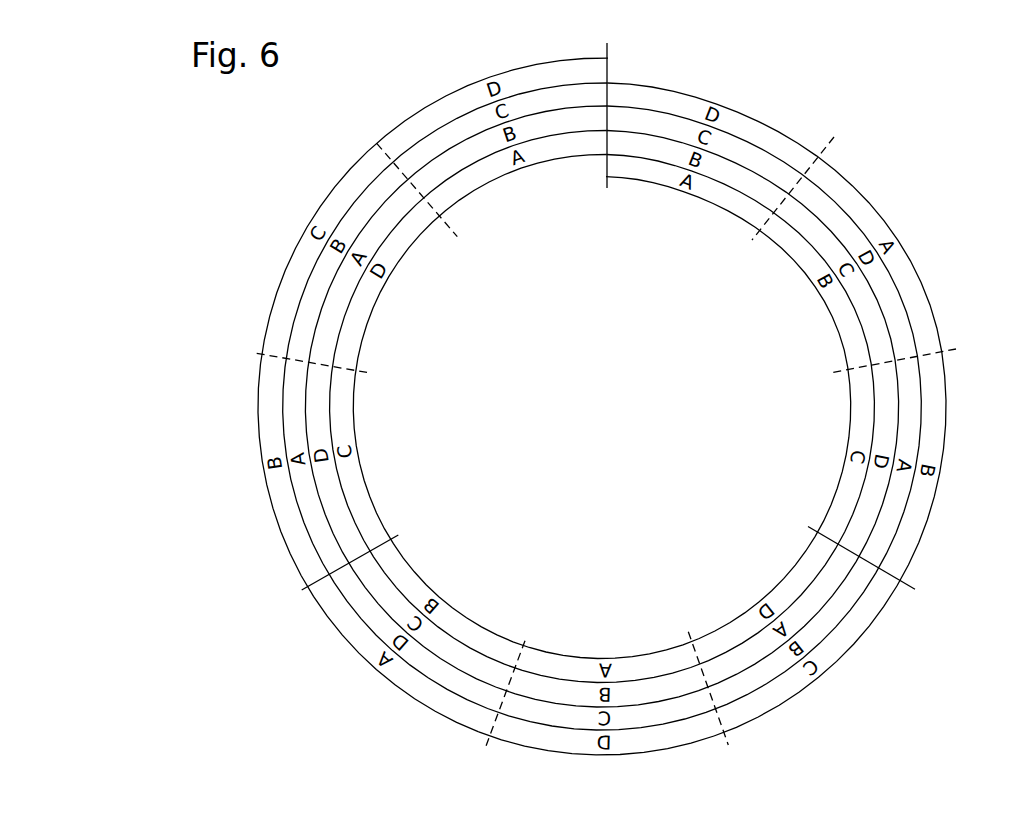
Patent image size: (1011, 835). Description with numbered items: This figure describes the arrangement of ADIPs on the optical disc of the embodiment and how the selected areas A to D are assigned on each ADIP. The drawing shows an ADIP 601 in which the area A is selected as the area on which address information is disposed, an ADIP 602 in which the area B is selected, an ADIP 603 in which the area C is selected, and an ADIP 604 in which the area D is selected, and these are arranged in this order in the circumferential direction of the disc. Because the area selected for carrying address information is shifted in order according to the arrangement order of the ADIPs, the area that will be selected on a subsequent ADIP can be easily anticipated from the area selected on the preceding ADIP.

The ADIP 601 is at (917, 295).
The ADIP 602 is at (915, 523).
The ADIP 603 is at (863, 617).
The ADIP 604 is at (668, 735).